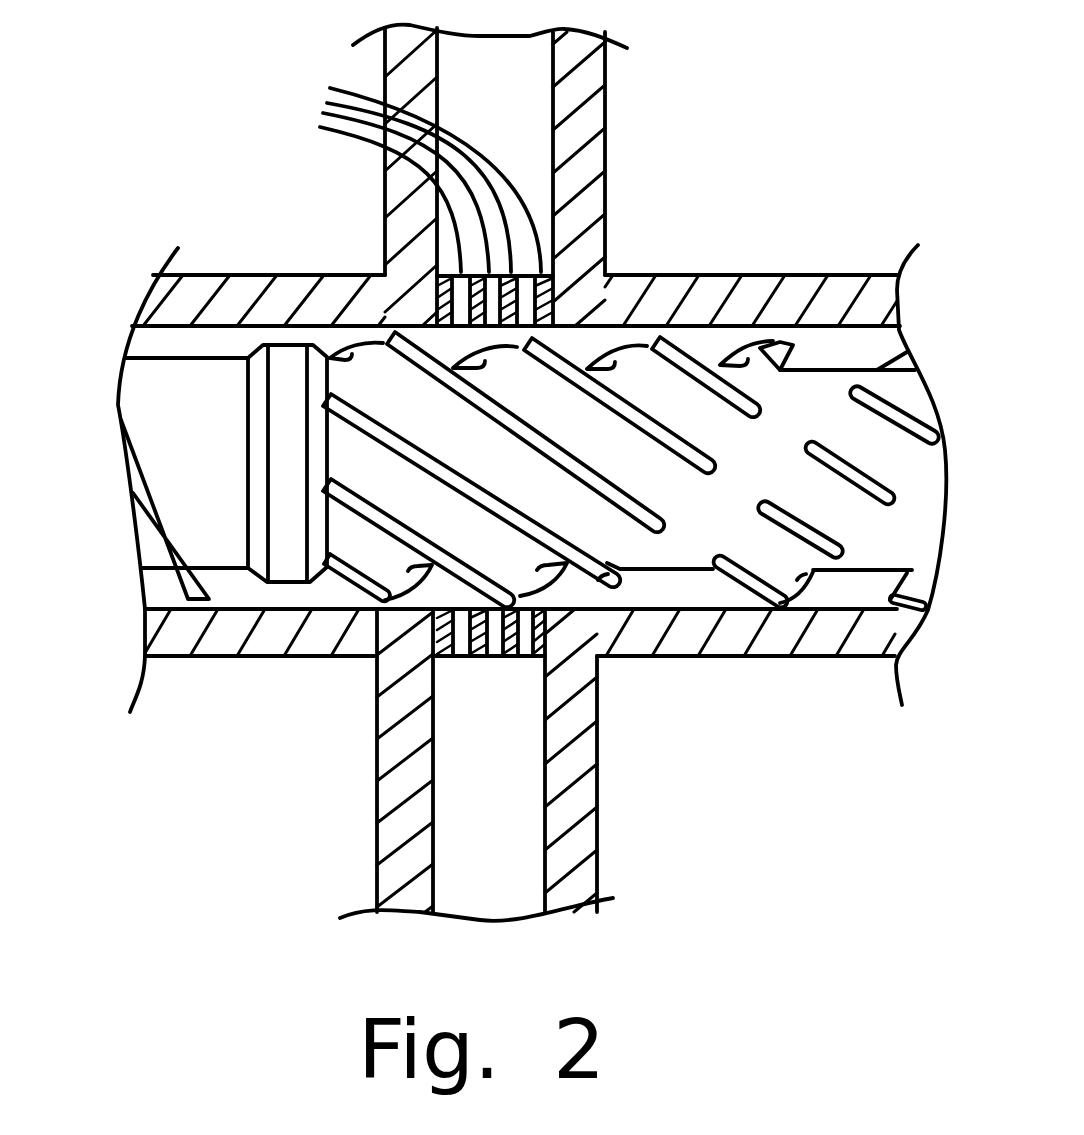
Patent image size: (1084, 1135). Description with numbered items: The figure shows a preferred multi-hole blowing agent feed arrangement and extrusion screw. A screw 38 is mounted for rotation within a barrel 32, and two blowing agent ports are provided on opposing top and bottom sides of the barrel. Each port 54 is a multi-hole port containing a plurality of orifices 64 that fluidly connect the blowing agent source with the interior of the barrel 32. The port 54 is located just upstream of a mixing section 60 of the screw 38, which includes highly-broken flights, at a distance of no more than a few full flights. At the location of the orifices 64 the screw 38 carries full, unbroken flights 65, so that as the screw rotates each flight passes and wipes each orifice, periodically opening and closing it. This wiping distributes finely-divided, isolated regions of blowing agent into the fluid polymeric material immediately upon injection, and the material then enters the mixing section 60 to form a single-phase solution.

The barrel 32 is at (257, 640).
The screw 38 is at (457, 463).
The port 54 is at (515, 732).
The mixing section 60 is at (634, 585).
The orifices 64 is at (394, 175).
The full, unbroken flights 65 is at (527, 430).